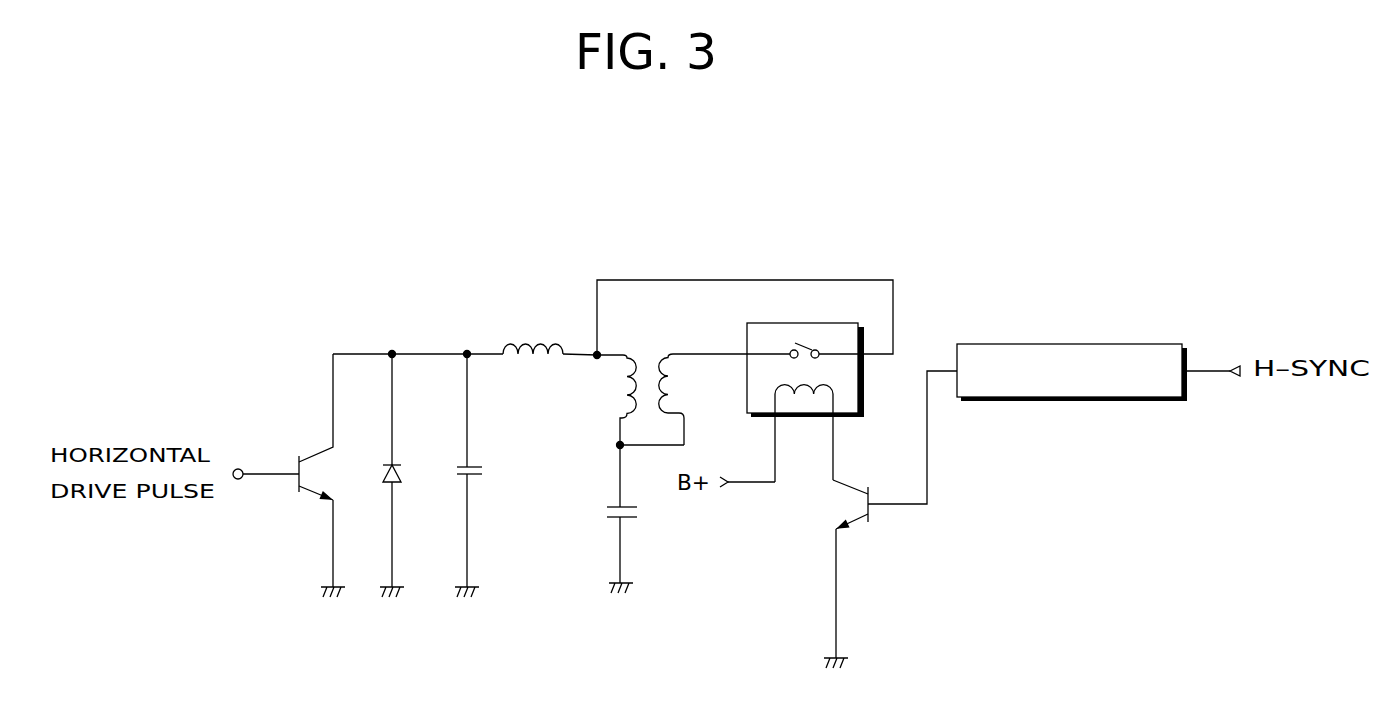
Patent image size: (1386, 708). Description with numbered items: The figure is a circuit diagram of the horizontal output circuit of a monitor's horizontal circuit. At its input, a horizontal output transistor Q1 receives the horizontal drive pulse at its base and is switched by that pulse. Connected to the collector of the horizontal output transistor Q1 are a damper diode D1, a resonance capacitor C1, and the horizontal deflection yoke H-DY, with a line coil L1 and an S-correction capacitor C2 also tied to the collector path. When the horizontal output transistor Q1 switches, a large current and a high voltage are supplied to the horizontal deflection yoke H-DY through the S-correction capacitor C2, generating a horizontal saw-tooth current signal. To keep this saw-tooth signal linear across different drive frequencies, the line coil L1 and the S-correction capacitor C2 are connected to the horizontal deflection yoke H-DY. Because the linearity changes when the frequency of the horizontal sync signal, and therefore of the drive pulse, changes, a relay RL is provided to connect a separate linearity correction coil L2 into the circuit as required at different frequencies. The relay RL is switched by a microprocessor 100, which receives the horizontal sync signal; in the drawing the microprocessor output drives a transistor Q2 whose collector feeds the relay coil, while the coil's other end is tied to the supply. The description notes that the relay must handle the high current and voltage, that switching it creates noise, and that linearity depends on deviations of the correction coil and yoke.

The horizontal output transistor Q1 is at (330, 470).
The damper diode D1 is at (412, 470).
The resonance capacitor C1 is at (488, 470).
The horizontal deflection yoke H-DY is at (545, 335).
The line coil L1 is at (606, 400).
The linearity correction coil L2 is at (724, 399).
The S-correction capacitor C2 is at (602, 514).
The relay RL is at (805, 402).
The relay driving transistor Q2 is at (877, 514).
The microprocessor 100 is at (1048, 343).